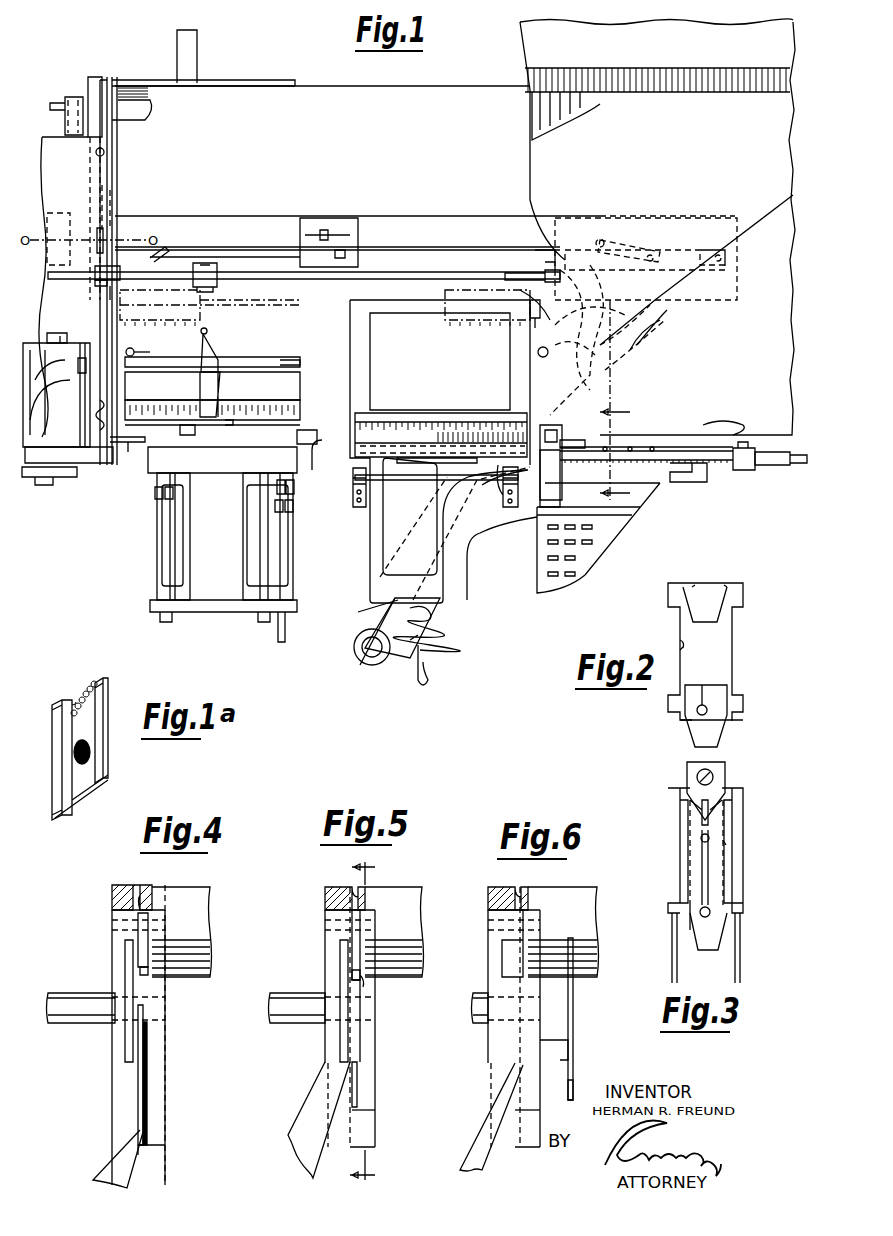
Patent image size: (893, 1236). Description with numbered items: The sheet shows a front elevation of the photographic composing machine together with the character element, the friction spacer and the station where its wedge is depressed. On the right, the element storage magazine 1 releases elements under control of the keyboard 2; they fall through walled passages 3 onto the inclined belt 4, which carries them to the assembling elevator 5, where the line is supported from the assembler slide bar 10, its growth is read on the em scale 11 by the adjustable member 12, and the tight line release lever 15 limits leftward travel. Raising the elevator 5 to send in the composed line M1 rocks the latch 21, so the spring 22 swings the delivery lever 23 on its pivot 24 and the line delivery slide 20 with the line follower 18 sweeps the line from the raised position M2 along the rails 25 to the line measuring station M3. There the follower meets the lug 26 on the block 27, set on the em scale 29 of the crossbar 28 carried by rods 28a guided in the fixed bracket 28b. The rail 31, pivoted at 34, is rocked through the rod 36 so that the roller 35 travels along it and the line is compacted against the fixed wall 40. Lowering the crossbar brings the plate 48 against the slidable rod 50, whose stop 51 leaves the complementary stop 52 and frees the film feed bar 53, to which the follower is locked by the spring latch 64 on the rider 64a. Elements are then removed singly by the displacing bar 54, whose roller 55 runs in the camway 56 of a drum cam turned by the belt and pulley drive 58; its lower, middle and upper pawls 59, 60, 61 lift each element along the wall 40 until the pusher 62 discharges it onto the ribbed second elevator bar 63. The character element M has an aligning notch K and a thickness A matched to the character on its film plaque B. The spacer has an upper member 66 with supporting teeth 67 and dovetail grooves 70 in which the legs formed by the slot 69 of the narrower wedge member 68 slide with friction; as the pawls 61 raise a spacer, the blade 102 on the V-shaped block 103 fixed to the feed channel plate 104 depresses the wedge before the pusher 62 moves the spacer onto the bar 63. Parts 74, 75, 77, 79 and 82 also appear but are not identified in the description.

In FIG. 1, the element storage magazine 1 is at (520, 40).
In FIG. 1, the keyboard 2 is at (546, 570).
In FIG. 1, the walled passages 3 is at (571, 100).
In FIG. 5, the walled passages 3 is at (364, 1026).
In FIG. 1, the downwardly inclined belt 4 is at (615, 344).
In FIG. 1, the assembling elevator 5 is at (372, 578).
In FIG. 1, the assembler slide bar 10 is at (787, 460).
In FIG. 1, the em scale 11 is at (716, 462).
In FIG. 1, the member carrying pointer 12 is at (700, 428).
In FIG. 1, the tight line release lever 15 is at (558, 485).
In FIG. 1, the line follower 18 is at (530, 318).
In FIG. 1, the line delivery slide 20 is at (682, 254).
In FIG. 1, the latch 21 is at (515, 274).
In FIG. 1, the spring 22 is at (430, 617).
In FIG. 1, the delivery lever 23 is at (612, 290).
In FIG. 1, the pivot 24 is at (355, 648).
In FIG. 1, the rails 25 is at (280, 293).
In FIG. 1, the lug 26 is at (206, 332).
In FIG. 1, the block 27 is at (212, 352).
In FIG. 1, the crossbar 28 is at (320, 403).
In FIG. 1, the rods 28a is at (256, 618).
In FIG. 1, the fixed bracket 28b is at (195, 548).
In FIG. 1, the em scale 29 is at (247, 422).
In FIG. 1, the rail 31 is at (262, 364).
In FIG. 1, the pivot 34 is at (148, 345).
In FIG. 1, the roller 35 is at (535, 355).
In FIG. 1, the rod 36 is at (288, 486).
In FIG. 1, the fixed wall 40 is at (115, 159).
In FIG. 4, the fixed wall 40 is at (143, 1173).
In FIG. 5, the fixed wall 40 is at (359, 1113).
In FIG. 6, the fixed wall 40 is at (528, 1113).
In FIG. 1, the plate 48 is at (182, 429).
In FIG. 1, the vertically slidable rod 50 is at (212, 391).
In FIG. 1, the stop 51 is at (95, 286).
In FIG. 1, the complementary stop 52 is at (112, 270).
In FIG. 1, the film feed bar 53 is at (383, 275).
In FIG. 1, the displacing bar 54 is at (95, 77).
In FIG. 1, the roller 55 is at (80, 377).
In FIG. 1, the camway 56 is at (35, 388).
In FIG. 1, the belt and pulley drive 58 is at (52, 481).
In FIG. 1, the lower set of pawls 59 is at (100, 230).
In FIG. 1, the middle set of pawls 60 is at (102, 197).
In FIG. 1, the upper set of pawls 61 is at (95, 148).
In FIG. 3, the upper set of pawls 61 is at (672, 946).
In FIG. 4, the upper set of pawls 61 is at (115, 1165).
In FIG. 5, the upper set of pawls 61 is at (315, 1112).
In FIG. 6, the upper set of pawls 61 is at (490, 1100).
In FIG. 1, the pusher 62 is at (100, 93).
In FIG. 4, the pusher 62 is at (125, 1040).
In FIG. 5, the pusher 62 is at (340, 1040).
In FIG. 6, the pusher 62 is at (562, 1057).
In FIG. 1, the second elevator bar 63 is at (145, 85).
In FIG. 4, the second elevator bar 63 is at (205, 922).
In FIG. 5, the second elevator bar 63 is at (412, 930).
In FIG. 6, the second elevator bar 63 is at (597, 929).
In FIG. 1, the spring latch 64 is at (224, 263).
In FIG. 1, the rider 64a is at (207, 262).
In FIG. 2, the stationary upper member 66 is at (735, 638).
In FIG. 3, the stationary upper member 66 is at (688, 832).
In FIG. 4, the stationary upper member 66 is at (137, 1081).
In FIG. 5, the stationary upper member 66 is at (352, 981).
In FIG. 6, the stationary upper member 66 is at (573, 991).
In FIG. 2, the teeth 67 is at (722, 590).
In FIG. 2, the wedge member 68 is at (718, 722).
In FIG. 3, the wedge member 68 is at (710, 950).
In FIG. 4, the wedge member 68 is at (148, 1116).
In FIG. 5, the wedge member 68 is at (357, 1094).
In FIG. 6, the wedge member 68 is at (575, 1089).
In FIG. 2, the slot 69 is at (697, 712).
In FIG. 3, the slot 69 is at (712, 883).
In FIG. 3, the dovetail grooves 70 is at (682, 892).
In FIG. 1, the bracket 74 is at (353, 498).
In FIG. 1, the curved guide 75 is at (486, 533).
In FIG. 1, the bar 77 is at (428, 475).
In FIG. 1, the bracket 79 is at (497, 498).
In FIG. 1, the scale 82 is at (416, 413).
In FIG. 3, the blade 102 is at (693, 812).
In FIG. 4, the blade 102 is at (145, 975).
In FIG. 5, the blade 102 is at (364, 977).
In FIG. 3, the V-shaped block 103 is at (686, 771).
In FIG. 4, the V-shaped block 103 is at (139, 951).
In FIG. 6, the V-shaped block 103 is at (510, 951).
In FIG. 1, the stationary feed channel plate 104 is at (112, 77).
In FIG. 4, the stationary feed channel plate 104 is at (112, 922).
In FIG. 5, the stationary feed channel plate 104 is at (325, 922).
In FIG. 6, the stationary feed channel plate 104 is at (493, 922).
In FIG. 1A, the over-all thickness dimension A is at (56, 765).
In FIG. 1A, the film plaque B is at (92, 753).
In FIG. 1A, the aligning notch K is at (102, 730).
In FIG. 2, the aligning notch K is at (678, 644).
In FIG. 3, the aligning notch K is at (730, 843).
In FIG. 1A, the character bearing element M is at (85, 792).
In FIG. 1, the composed line of elements M1 is at (475, 420).
In FIG. 1, the raised position M2 is at (487, 308).
In FIG. 1, the line measuring station M3 is at (160, 308).